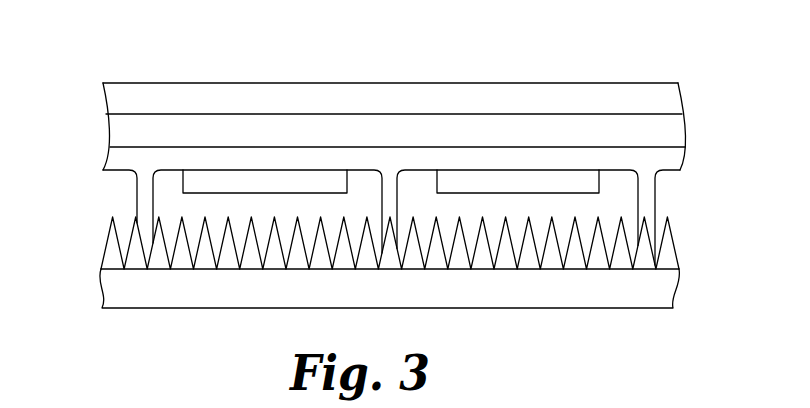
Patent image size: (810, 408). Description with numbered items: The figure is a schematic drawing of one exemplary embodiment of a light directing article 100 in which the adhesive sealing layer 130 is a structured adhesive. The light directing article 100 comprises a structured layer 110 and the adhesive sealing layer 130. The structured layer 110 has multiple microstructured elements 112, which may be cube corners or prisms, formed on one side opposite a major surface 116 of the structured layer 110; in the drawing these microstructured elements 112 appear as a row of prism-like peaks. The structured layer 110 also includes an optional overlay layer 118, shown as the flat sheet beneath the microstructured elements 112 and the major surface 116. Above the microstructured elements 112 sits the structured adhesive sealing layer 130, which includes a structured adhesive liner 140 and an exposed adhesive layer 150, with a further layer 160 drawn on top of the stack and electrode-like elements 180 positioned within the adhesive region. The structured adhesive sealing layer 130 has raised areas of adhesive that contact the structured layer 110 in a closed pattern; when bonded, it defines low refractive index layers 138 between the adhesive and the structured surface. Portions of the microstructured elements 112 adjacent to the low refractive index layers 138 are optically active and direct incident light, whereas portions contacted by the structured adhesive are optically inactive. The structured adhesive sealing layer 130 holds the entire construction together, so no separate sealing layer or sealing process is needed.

The light directing article 100 is at (585, 70).
The structured layer 110 is at (697, 222).
The microstructured elements 112 is at (228, 258).
The major surface 116 is at (577, 270).
The overlay layer 118 is at (113, 293).
The adhesive sealing layer 130 is at (697, 113).
The low refractive index layers 138 is at (168, 203).
The structured adhesive liner 140 is at (118, 165).
The exposed adhesive layer 150 is at (121, 133).
The third layer 160 is at (118, 102).
The electrode 180 is at (245, 177).